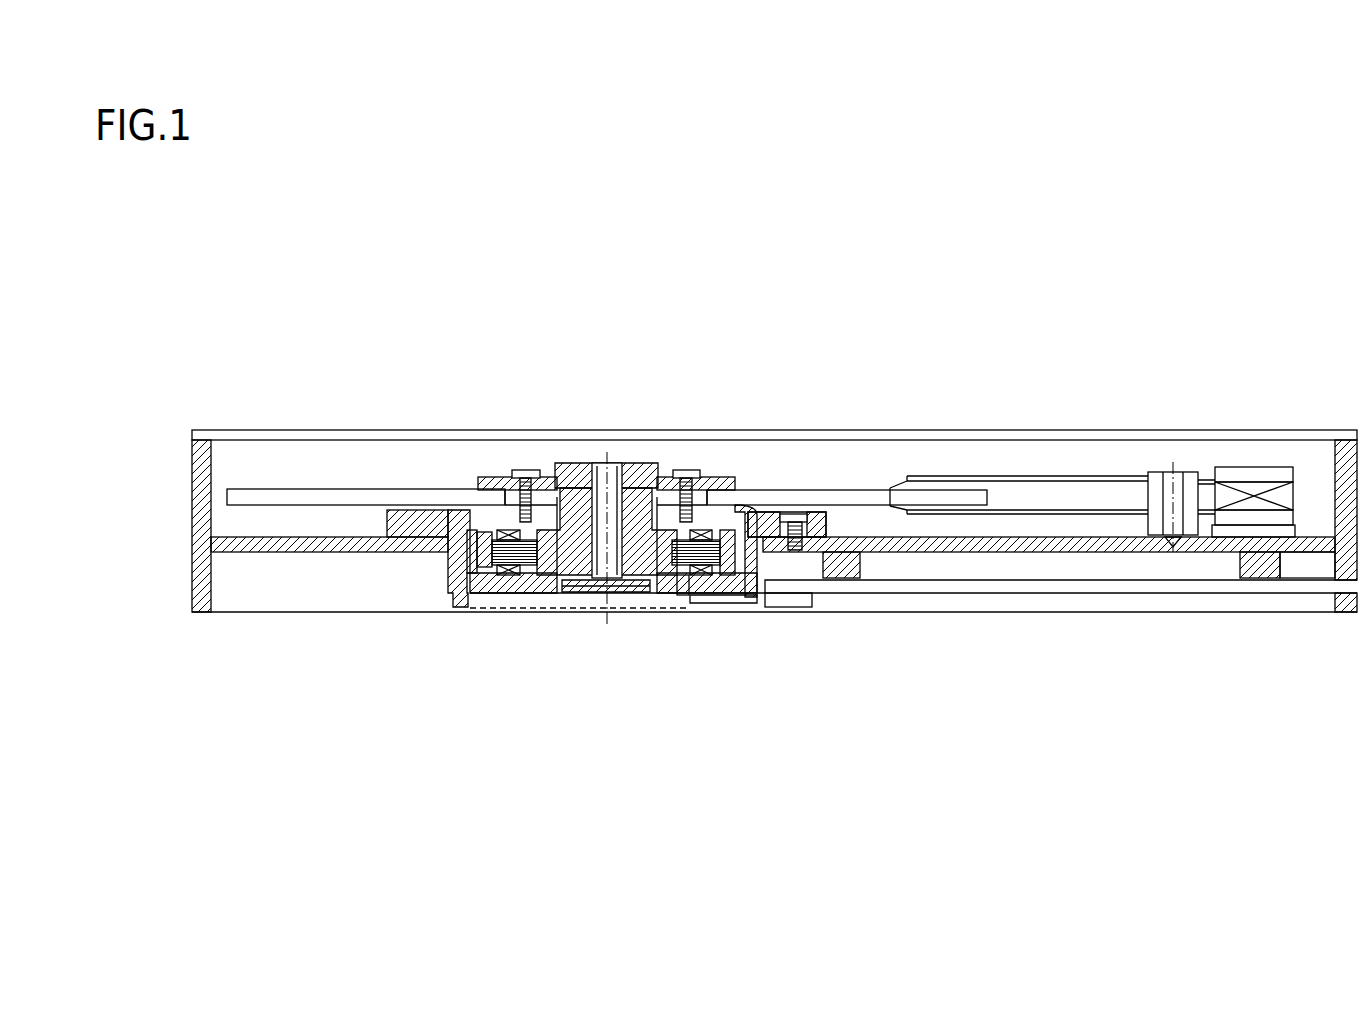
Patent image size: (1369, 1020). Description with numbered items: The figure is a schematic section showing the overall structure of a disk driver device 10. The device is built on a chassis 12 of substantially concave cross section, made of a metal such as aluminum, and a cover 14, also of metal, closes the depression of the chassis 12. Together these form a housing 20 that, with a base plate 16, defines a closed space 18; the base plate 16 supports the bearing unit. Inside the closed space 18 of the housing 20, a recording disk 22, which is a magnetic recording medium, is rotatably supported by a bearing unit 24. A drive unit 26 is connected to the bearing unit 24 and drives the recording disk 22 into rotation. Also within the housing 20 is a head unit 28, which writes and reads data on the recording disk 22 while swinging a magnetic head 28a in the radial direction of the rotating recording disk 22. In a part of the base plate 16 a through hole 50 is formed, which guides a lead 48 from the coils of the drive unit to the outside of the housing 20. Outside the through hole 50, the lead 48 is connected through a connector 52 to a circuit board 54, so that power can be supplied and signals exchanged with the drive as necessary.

The disk driver device 10 is at (958, 315).
The chassis 12 is at (335, 549).
The cover 14 is at (431, 432).
The base plate 16 is at (464, 583).
The closed space 18 is at (329, 482).
The housing 20 is at (189, 462).
The recording disk 22 is at (835, 488).
The bearing unit 24 is at (634, 509).
The drive unit 26 is at (522, 578).
The head unit 28 is at (1078, 477).
The magnetic head 28a is at (893, 484).
The lead 48 is at (702, 594).
The through hole 50 is at (683, 597).
The connector 52 is at (790, 601).
The circuit board 54 is at (1008, 586).